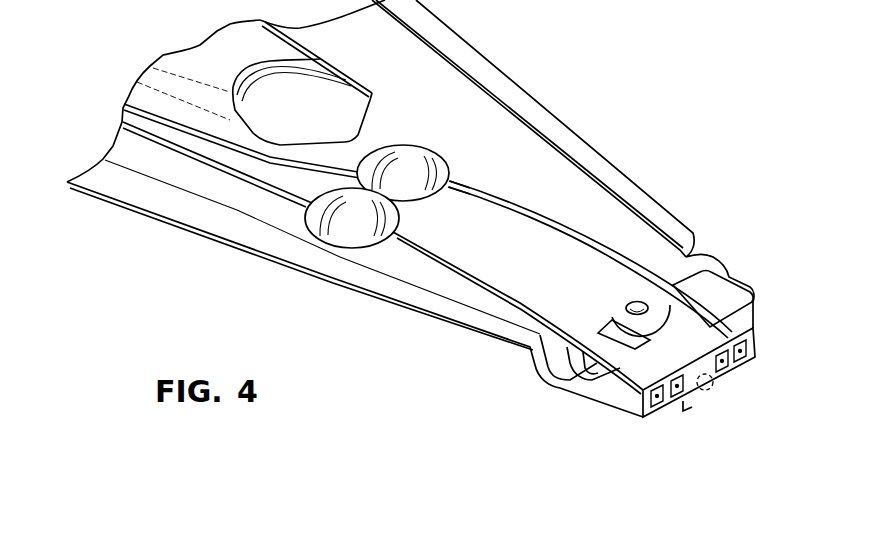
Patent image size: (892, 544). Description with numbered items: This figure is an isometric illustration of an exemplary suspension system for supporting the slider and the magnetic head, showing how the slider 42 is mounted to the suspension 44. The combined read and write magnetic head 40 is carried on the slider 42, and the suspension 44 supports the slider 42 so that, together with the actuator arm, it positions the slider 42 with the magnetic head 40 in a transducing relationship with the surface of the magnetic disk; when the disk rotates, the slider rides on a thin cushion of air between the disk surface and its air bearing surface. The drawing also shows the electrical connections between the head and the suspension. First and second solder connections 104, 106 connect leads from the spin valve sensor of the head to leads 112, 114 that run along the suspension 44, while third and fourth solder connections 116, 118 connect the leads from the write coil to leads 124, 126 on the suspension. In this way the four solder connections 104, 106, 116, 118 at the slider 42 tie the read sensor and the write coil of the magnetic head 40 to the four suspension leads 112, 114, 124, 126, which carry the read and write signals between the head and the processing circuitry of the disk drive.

The magnetic head 40 is at (713, 397).
The slider 42 is at (598, 412).
The suspension 44 is at (553, 110).
The first solder connection 104 is at (652, 406).
The second solder connection 106 is at (755, 348).
The lead 112 is at (426, 256).
The lead 114 is at (610, 247).
The third solder connection 116 is at (677, 398).
The fourth solder connection 118 is at (728, 367).
The lead 124 is at (472, 273).
The lead 126 is at (528, 211).